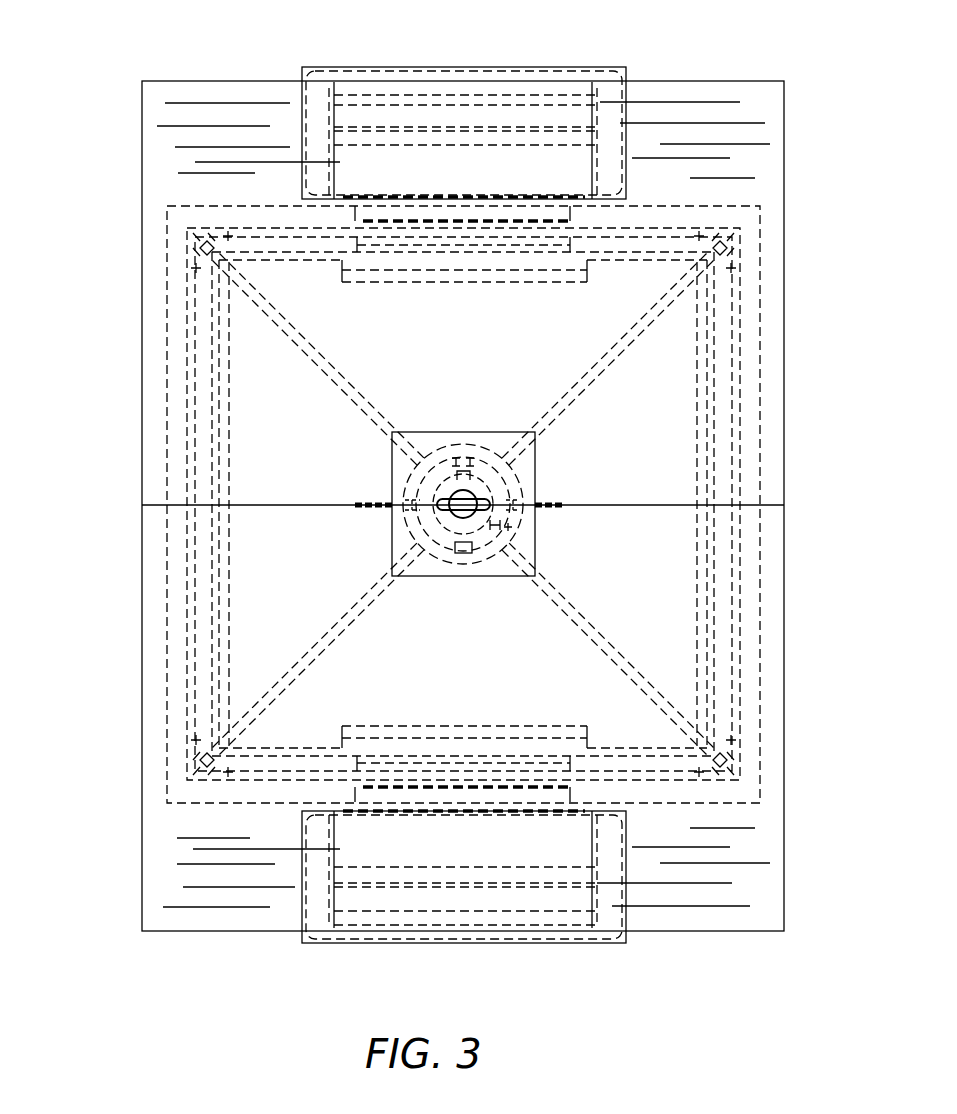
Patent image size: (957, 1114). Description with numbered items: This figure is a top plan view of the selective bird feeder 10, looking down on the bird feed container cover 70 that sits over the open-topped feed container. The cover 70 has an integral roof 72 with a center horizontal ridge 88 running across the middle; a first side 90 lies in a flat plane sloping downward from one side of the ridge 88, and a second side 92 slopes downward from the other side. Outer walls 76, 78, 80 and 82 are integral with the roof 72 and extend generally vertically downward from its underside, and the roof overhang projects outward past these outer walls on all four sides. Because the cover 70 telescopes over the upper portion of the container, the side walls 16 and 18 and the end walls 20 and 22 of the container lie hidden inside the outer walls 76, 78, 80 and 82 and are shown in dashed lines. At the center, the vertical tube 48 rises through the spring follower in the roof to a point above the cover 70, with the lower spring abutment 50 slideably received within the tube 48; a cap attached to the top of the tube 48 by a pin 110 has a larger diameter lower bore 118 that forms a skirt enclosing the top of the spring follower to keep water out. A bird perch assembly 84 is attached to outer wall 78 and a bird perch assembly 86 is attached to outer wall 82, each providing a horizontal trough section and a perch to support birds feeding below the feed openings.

The bird feeder 10 is at (130, 588).
The side wall 16 is at (642, 278).
The side wall 18 is at (305, 730).
The end wall 20 is at (230, 373).
The end wall 22 is at (697, 387).
The vertical tube 48 is at (540, 535).
The lower spring abutment 50 is at (437, 455).
The bird feed container cover 70 is at (128, 882).
The roof 72 is at (155, 160).
The outer wall 76 is at (750, 443).
The outer wall 78 is at (348, 214).
The outer wall 80 is at (167, 390).
The outer wall 82 is at (592, 810).
The bird perch assembly 84 is at (587, 68).
The bird perch assembly 86 is at (595, 945).
The center horizontal ridge 88 is at (779, 506).
The first side 90 is at (785, 105).
The second side 92 is at (762, 835).
The pin 110 is at (388, 503).
The lower bore 118 is at (540, 475).